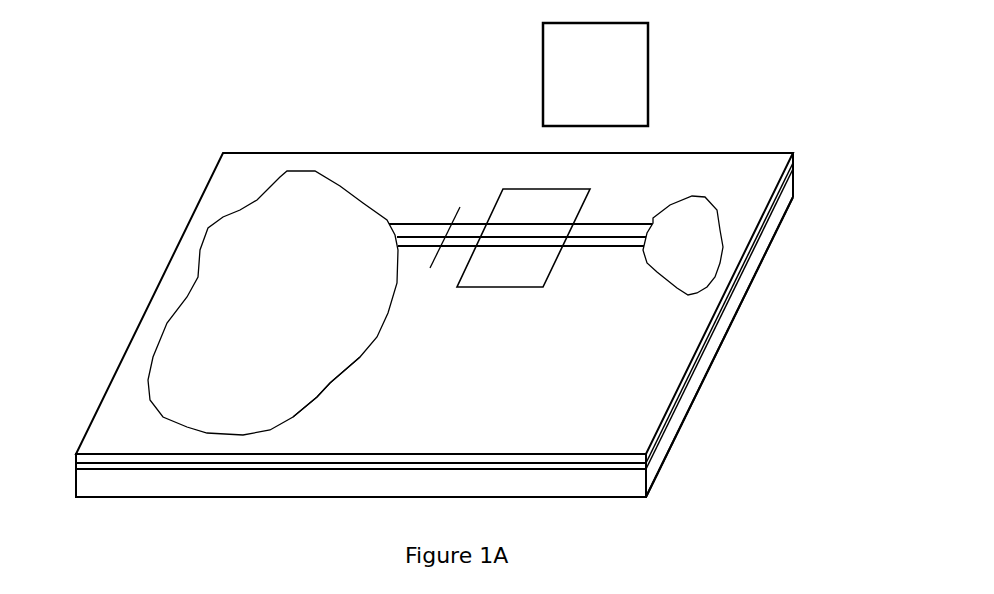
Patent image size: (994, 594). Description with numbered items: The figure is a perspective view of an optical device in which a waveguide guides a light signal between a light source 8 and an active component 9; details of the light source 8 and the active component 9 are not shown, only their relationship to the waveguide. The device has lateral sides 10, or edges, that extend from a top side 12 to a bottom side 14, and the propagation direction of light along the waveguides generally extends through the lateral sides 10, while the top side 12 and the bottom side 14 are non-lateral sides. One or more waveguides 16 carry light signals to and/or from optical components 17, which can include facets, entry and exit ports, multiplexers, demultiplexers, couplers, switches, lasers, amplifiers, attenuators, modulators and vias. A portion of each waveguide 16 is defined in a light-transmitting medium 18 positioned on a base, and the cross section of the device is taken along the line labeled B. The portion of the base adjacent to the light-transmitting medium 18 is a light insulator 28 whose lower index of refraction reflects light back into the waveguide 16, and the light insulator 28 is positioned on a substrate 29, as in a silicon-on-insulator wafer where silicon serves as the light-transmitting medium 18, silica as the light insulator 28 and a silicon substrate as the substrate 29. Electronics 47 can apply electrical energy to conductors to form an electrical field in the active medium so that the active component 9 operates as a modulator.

The lateral sides 10 is at (71, 452).
The top side 12 is at (271, 170).
The optical components 17 is at (320, 391).
The waveguides 16 is at (394, 205).
The line B is at (458, 211).
The active component 9 is at (516, 306).
The light source 8 is at (659, 316).
The bottom side 14 is at (230, 498).
The light insulator 28 is at (316, 470).
The light-transmitting medium 18 is at (600, 456).
The substrate 29 is at (663, 449).
The electronics 47 is at (625, 80).